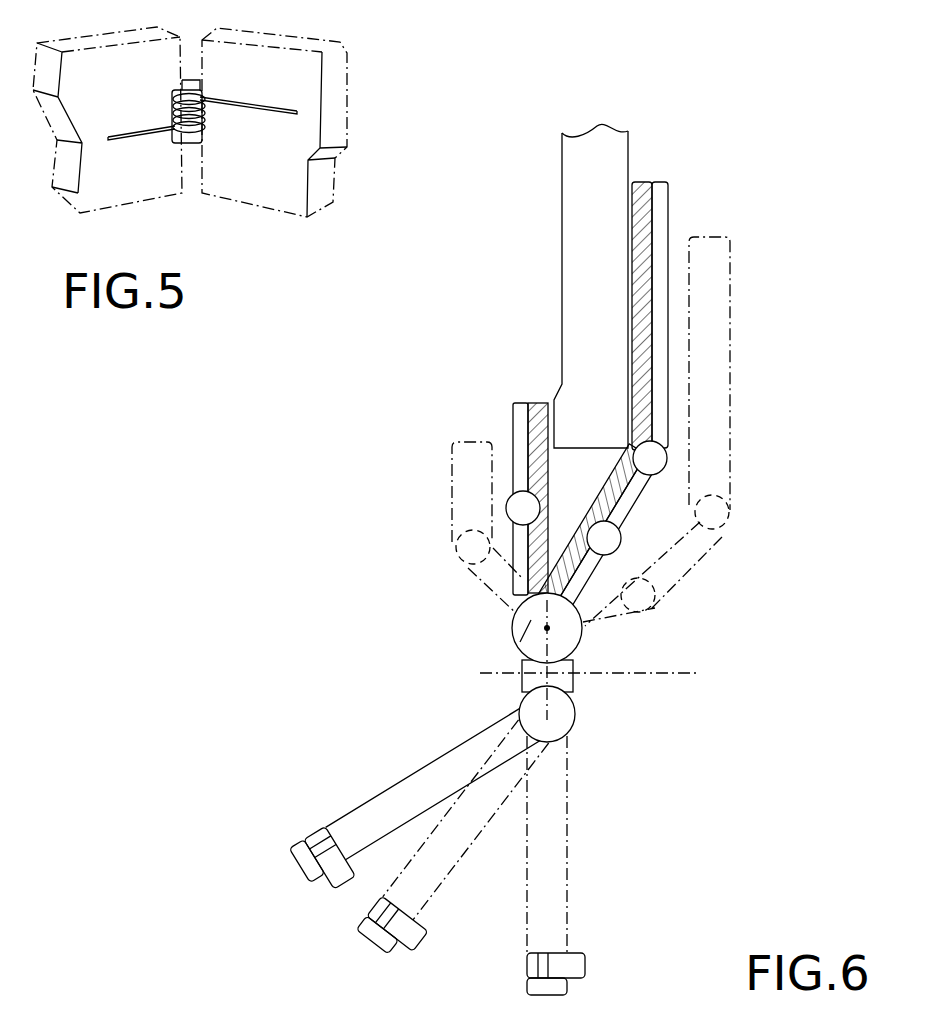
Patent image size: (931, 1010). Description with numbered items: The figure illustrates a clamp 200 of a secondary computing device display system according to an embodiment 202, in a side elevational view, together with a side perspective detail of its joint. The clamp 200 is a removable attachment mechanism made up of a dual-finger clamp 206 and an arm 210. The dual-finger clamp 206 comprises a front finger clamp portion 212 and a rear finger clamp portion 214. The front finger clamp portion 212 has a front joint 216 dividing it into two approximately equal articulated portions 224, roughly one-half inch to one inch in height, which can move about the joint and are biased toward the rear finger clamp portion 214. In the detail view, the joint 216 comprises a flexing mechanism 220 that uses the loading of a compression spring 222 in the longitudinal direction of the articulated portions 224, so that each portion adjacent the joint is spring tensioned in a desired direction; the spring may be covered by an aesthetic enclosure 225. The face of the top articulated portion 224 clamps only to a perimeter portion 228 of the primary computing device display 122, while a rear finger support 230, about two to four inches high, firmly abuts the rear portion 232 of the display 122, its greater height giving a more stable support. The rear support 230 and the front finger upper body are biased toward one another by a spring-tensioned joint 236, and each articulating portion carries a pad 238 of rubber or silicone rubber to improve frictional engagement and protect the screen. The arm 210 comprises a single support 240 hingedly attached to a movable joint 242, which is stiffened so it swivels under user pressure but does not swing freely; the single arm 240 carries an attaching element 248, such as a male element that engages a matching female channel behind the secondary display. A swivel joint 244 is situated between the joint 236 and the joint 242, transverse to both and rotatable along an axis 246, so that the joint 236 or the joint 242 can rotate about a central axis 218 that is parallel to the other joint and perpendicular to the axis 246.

In FIG. 6, the primary computing device display 122 is at (561, 222).
In FIG. 6, the clamp 200 is at (648, 852).
In FIG. 6, the embodiment 202 is at (420, 402).
In FIG. 6, the dual-finger clamp 206 is at (499, 642).
In FIG. 6, the arm 210 is at (418, 846).
In FIG. 6, the front finger clamp portion 212 is at (518, 404).
In FIG. 6, the rear finger clamp portion 214 is at (643, 183).
In FIG. 5, the front joint 216 is at (166, 91).
In FIG. 6, the front joint 216 is at (506, 508).
In FIG. 6, the central axis 218 is at (513, 618).
In FIG. 5, the flexing mechanism 220 is at (206, 116).
In FIG. 5, the compression spring 222 is at (173, 120).
In FIG. 6, the articulated portion 224 is at (513, 436).
In FIG. 6, the aesthetic enclosure 225 is at (458, 548).
In FIG. 6, the perimeter portion 228 is at (553, 403).
In FIG. 6, the rear finger support 230 is at (662, 275).
In FIG. 6, the rear portion 232 is at (627, 150).
In FIG. 6, the spring-tensioned joint 236 is at (520, 642).
In FIG. 6, the pad 238 is at (537, 404).
In FIG. 6, the single support 240 is at (418, 846).
In FIG. 6, the movable joint 242 is at (575, 730).
In FIG. 6, the swivel joint 244 is at (578, 702).
In FIG. 6, the axis 246 is at (618, 673).
In FIG. 6, the attaching element 248 is at (332, 880).